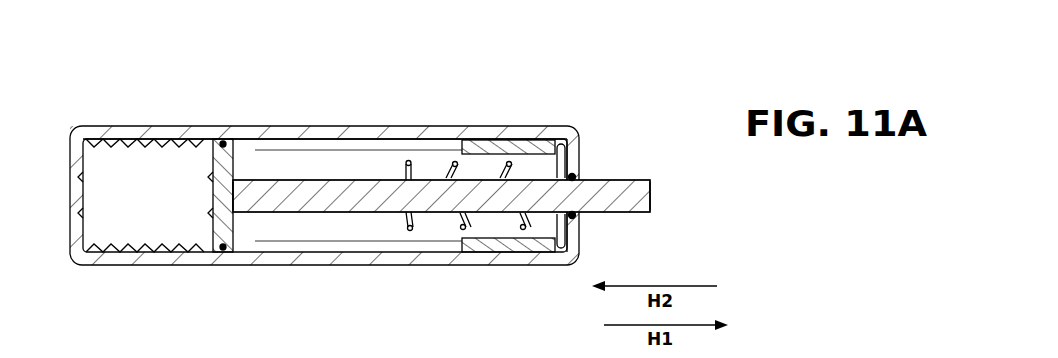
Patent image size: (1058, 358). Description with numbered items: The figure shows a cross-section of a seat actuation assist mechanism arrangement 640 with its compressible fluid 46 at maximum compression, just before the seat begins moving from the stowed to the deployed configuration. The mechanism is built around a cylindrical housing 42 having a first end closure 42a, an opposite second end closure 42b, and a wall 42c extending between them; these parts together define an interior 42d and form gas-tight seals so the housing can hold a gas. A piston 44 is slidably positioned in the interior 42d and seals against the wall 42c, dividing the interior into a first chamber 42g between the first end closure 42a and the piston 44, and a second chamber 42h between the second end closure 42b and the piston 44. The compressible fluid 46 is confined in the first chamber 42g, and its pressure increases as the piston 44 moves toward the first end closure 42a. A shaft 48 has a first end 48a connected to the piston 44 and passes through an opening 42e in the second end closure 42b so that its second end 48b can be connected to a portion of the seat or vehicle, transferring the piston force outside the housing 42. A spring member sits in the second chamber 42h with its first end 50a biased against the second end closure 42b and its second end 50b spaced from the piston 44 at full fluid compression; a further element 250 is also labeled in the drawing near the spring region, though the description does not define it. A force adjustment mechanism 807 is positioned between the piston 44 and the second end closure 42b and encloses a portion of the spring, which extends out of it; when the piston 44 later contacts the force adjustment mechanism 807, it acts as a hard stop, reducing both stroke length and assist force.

The housing 42 is at (402, 120).
The first end closure 42a is at (70, 196).
The second end closure 42b is at (580, 155).
The wall 42c is at (222, 134).
The interior 42d is at (308, 165).
The opening 42e is at (588, 218).
The first chamber 42g is at (97, 140).
The second chamber 42h is at (367, 158).
The piston 44 is at (215, 165).
The compressible fluid 46 is at (72, 212).
The shaft 48 is at (622, 178).
The first end of shaft 48a is at (245, 195).
The second end of shaft 48b is at (628, 212).
The first end of spring member 50a is at (556, 160).
The second end of spring member 50b is at (408, 162).
The pin 250 is at (420, 215).
The seat actuation assist mechanism arrangement 640 is at (716, 92).
The force adjustment mechanism 807 is at (517, 143).